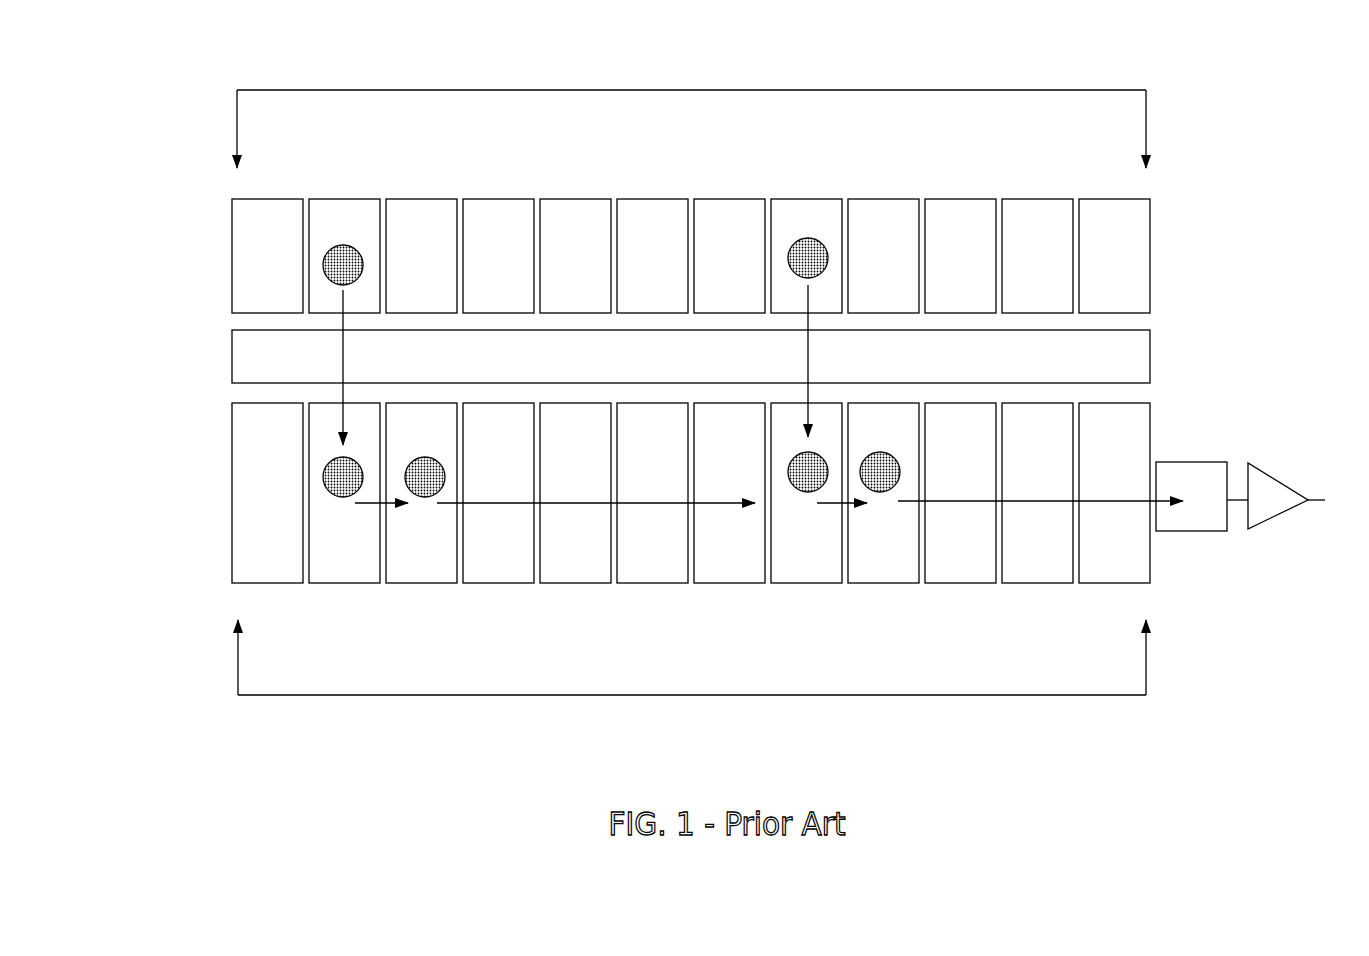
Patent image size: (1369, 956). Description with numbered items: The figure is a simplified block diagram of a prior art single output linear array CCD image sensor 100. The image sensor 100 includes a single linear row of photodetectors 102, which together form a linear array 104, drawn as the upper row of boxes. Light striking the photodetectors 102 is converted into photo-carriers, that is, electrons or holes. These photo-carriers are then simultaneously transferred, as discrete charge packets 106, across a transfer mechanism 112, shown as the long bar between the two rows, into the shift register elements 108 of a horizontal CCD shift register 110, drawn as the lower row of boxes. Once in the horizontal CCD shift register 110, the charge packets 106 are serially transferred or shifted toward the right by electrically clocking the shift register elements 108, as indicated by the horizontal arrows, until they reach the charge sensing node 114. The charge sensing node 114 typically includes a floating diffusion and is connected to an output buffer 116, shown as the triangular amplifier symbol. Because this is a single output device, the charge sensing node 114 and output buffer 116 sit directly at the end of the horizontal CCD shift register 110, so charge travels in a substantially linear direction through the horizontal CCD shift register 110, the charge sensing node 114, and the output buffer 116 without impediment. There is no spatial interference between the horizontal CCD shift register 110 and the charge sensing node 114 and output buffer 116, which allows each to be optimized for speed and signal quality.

The image sensor 100 is at (168, 128).
The photodetectors 102 is at (411, 210).
The linear array 104 is at (691, 109).
The charge packets 106 is at (343, 245).
The shift register elements 108 is at (261, 567).
The horizontal CCD shift register 110 is at (692, 676).
The transfer mechanism 112 is at (240, 357).
The charge sensing node 114 is at (1190, 520).
The output buffer 116 is at (1275, 490).